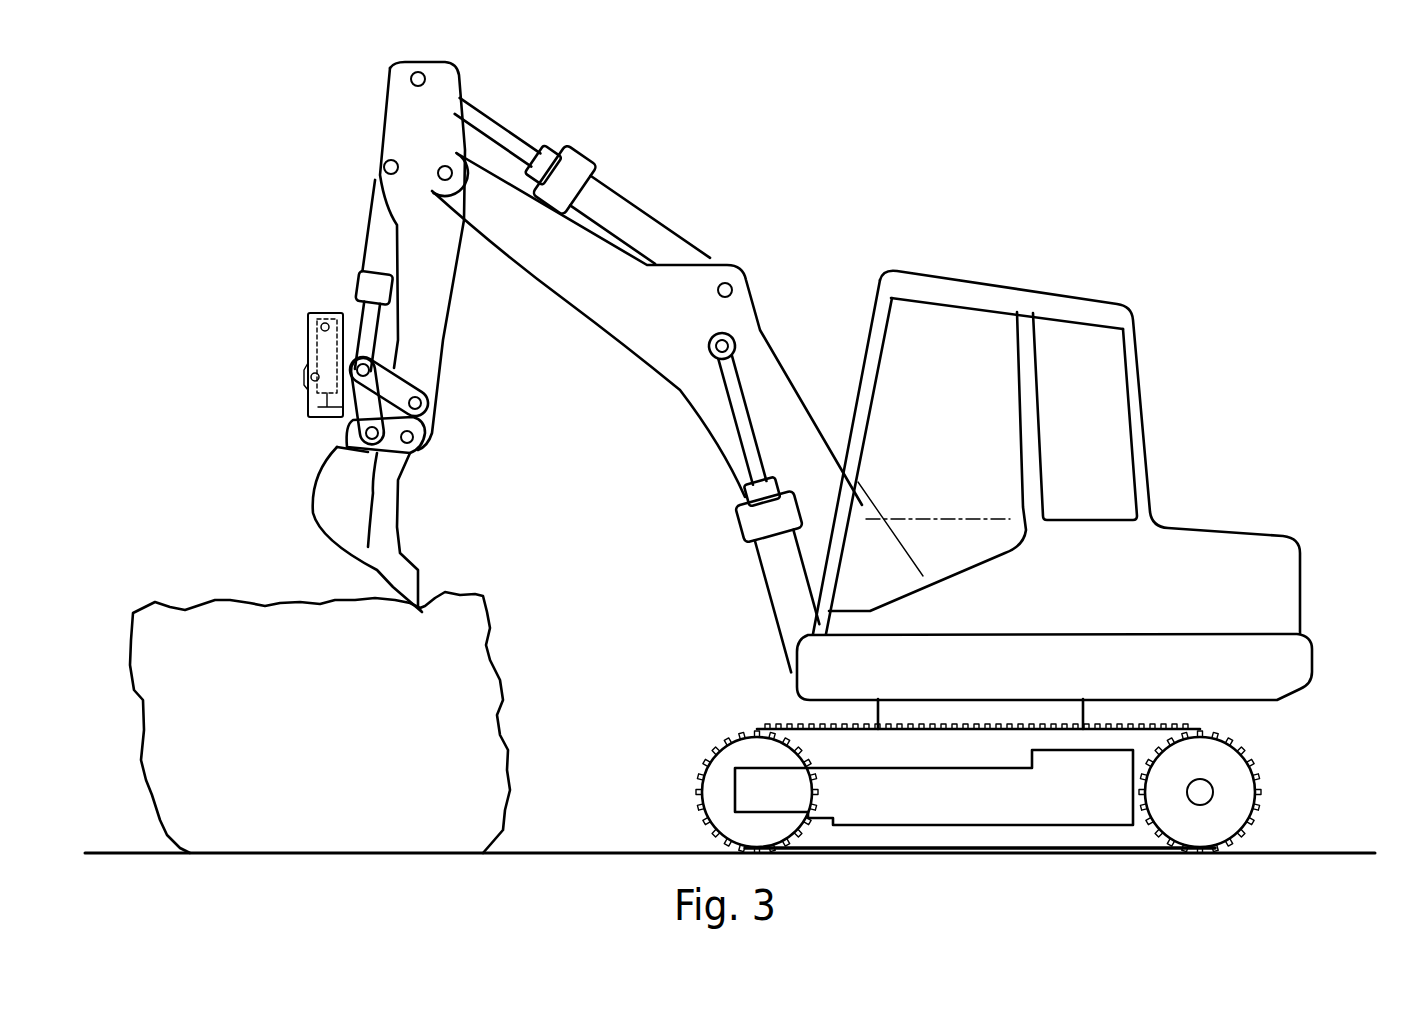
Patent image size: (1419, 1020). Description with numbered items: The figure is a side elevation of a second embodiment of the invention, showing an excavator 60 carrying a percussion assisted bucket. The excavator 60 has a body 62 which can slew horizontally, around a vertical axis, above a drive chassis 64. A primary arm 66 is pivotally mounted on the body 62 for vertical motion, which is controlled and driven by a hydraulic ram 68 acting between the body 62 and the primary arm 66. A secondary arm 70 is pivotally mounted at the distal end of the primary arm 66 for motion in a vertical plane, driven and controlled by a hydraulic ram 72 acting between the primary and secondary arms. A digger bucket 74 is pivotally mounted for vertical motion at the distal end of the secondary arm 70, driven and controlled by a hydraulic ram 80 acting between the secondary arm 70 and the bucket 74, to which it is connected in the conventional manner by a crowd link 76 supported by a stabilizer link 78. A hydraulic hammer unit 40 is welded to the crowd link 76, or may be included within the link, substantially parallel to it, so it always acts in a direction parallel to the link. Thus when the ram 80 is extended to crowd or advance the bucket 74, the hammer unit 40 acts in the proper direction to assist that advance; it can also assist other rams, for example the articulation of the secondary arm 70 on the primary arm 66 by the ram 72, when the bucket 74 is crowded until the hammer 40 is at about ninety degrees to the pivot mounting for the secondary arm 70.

The hydraulic hammer unit 40 is at (313, 343).
The excavator 60 is at (1141, 263).
The body 62 is at (1287, 665).
The drive chassis 64 is at (1093, 763).
The primary arm 66 is at (790, 410).
The hydraulic ram 68 is at (793, 585).
The secondary arm 70 is at (427, 302).
The hydraulic ram 72 is at (640, 215).
The digger bucket 74 is at (332, 502).
The crowd link 76 is at (347, 417).
The stabilizer link 78 is at (395, 385).
The hydraulic ram 80 is at (378, 238).